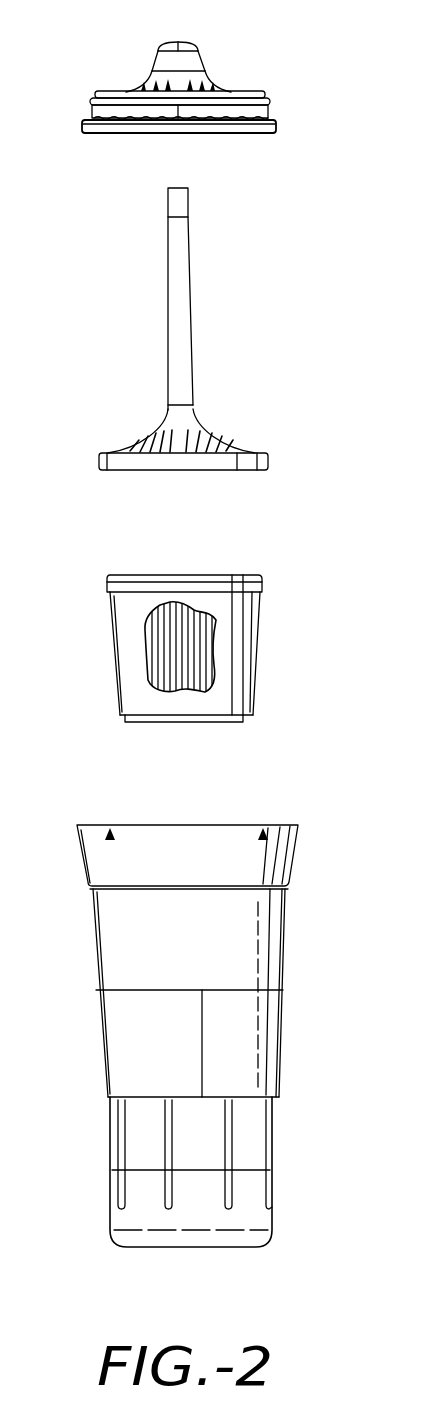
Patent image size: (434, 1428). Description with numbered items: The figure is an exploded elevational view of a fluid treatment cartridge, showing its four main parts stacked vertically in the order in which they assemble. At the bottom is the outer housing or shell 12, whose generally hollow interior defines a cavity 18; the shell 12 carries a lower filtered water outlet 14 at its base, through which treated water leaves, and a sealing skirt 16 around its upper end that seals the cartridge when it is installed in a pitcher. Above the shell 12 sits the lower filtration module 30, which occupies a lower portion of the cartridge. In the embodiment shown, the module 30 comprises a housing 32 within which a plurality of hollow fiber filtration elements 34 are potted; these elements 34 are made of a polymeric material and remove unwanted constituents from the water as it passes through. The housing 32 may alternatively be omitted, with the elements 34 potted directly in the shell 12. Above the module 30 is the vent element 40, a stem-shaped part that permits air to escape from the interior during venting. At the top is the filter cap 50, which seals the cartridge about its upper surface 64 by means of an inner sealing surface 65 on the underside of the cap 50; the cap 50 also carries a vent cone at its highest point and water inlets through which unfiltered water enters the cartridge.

The outer housing or shell 12 is at (286, 962).
The lower filtered water outlet 14 is at (212, 1248).
The sealing skirt 16 is at (214, 831).
The cavity 18 is at (68, 885).
The lower filtration module 30 is at (222, 648).
The housing 32 is at (258, 627).
The hollow fiber filtration elements 34 is at (160, 643).
The vent element 40 is at (237, 371).
The filter cap 50 is at (229, 116).
The upper surface 64 is at (280, 825).
The inner sealing surface 65 is at (253, 134).